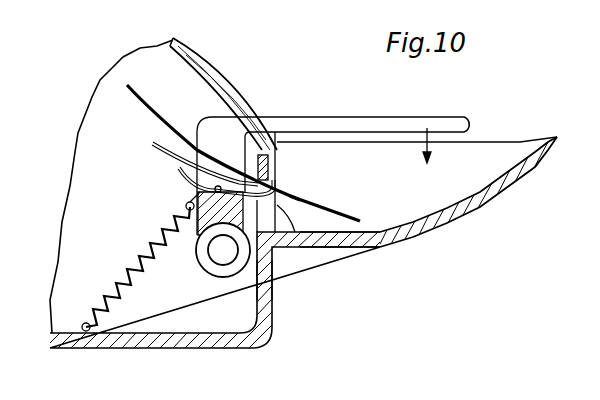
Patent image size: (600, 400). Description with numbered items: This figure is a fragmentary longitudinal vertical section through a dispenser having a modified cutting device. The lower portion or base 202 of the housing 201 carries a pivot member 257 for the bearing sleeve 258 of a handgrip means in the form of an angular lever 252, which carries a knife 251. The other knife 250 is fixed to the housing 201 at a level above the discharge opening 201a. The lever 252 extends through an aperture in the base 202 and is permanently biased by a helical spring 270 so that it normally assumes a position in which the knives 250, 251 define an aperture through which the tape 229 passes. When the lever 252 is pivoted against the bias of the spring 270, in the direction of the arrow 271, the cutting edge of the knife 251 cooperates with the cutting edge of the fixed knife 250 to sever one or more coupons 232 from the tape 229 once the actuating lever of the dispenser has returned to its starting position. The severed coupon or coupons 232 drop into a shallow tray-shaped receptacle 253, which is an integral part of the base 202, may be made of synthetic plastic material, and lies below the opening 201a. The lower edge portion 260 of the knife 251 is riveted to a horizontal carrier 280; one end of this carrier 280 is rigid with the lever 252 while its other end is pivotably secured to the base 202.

The housing 201 is at (95, 352).
The discharge opening 201a is at (308, 247).
The base 202 is at (272, 293).
The tape 229 is at (135, 97).
The coupon 232 is at (333, 210).
The knife 250 is at (275, 165).
The knife 251 is at (154, 151).
The angular lever 252 is at (317, 116).
The tray-shaped receptacle 253 is at (462, 218).
The pivot member 257 is at (220, 262).
The bearing sleeve 258 is at (246, 259).
The lower edge portion 260 is at (200, 190).
The helical spring 270 is at (135, 264).
The arrow 271 is at (433, 145).
The horizontal carrier 280 is at (197, 222).